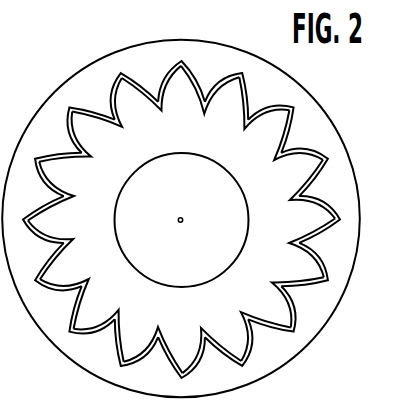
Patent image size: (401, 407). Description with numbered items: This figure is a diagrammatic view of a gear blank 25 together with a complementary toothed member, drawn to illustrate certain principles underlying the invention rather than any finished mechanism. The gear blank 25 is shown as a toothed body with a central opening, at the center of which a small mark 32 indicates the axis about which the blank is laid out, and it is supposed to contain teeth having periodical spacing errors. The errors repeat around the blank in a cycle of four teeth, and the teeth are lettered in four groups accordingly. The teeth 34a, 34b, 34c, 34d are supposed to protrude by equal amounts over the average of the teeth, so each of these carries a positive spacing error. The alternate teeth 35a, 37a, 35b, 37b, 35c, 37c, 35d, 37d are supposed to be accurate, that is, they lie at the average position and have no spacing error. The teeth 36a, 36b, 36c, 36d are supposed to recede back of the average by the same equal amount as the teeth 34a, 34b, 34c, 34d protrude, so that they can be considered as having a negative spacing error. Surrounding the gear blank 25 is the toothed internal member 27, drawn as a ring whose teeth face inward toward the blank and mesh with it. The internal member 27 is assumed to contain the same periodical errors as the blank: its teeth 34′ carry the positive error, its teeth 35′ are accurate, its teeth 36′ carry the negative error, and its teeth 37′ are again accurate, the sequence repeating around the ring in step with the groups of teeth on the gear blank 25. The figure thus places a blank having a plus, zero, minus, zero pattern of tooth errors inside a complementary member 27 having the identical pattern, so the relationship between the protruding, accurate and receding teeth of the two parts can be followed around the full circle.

The toothed internal member 27 is at (106, 72).
The gear blank 25 is at (118, 268).
The center axis 32 is at (182, 218).
The tooth 34a is at (181, 89).
The tooth 35a is at (226, 102).
The tooth 36a is at (270, 128).
The tooth 37a is at (298, 173).
The tooth 34b is at (307, 219).
The tooth 35b is at (299, 264).
The tooth 36b is at (270, 308).
The tooth 37b is at (229, 339).
The tooth 34c is at (181, 348).
The tooth 35c is at (136, 339).
The tooth 36c is at (91, 309).
The tooth 37c is at (62, 267).
The tooth 34d is at (52, 219).
The tooth 35d is at (63, 174).
The tooth 36d is at (90, 130).
The tooth 37d is at (135, 100).
The tooth of internal member 34′ is at (178, 217).
The tooth of internal member 35′ is at (180, 214).
The tooth of internal member 36′ is at (181, 218).
The tooth of internal member 37′ is at (179, 219).